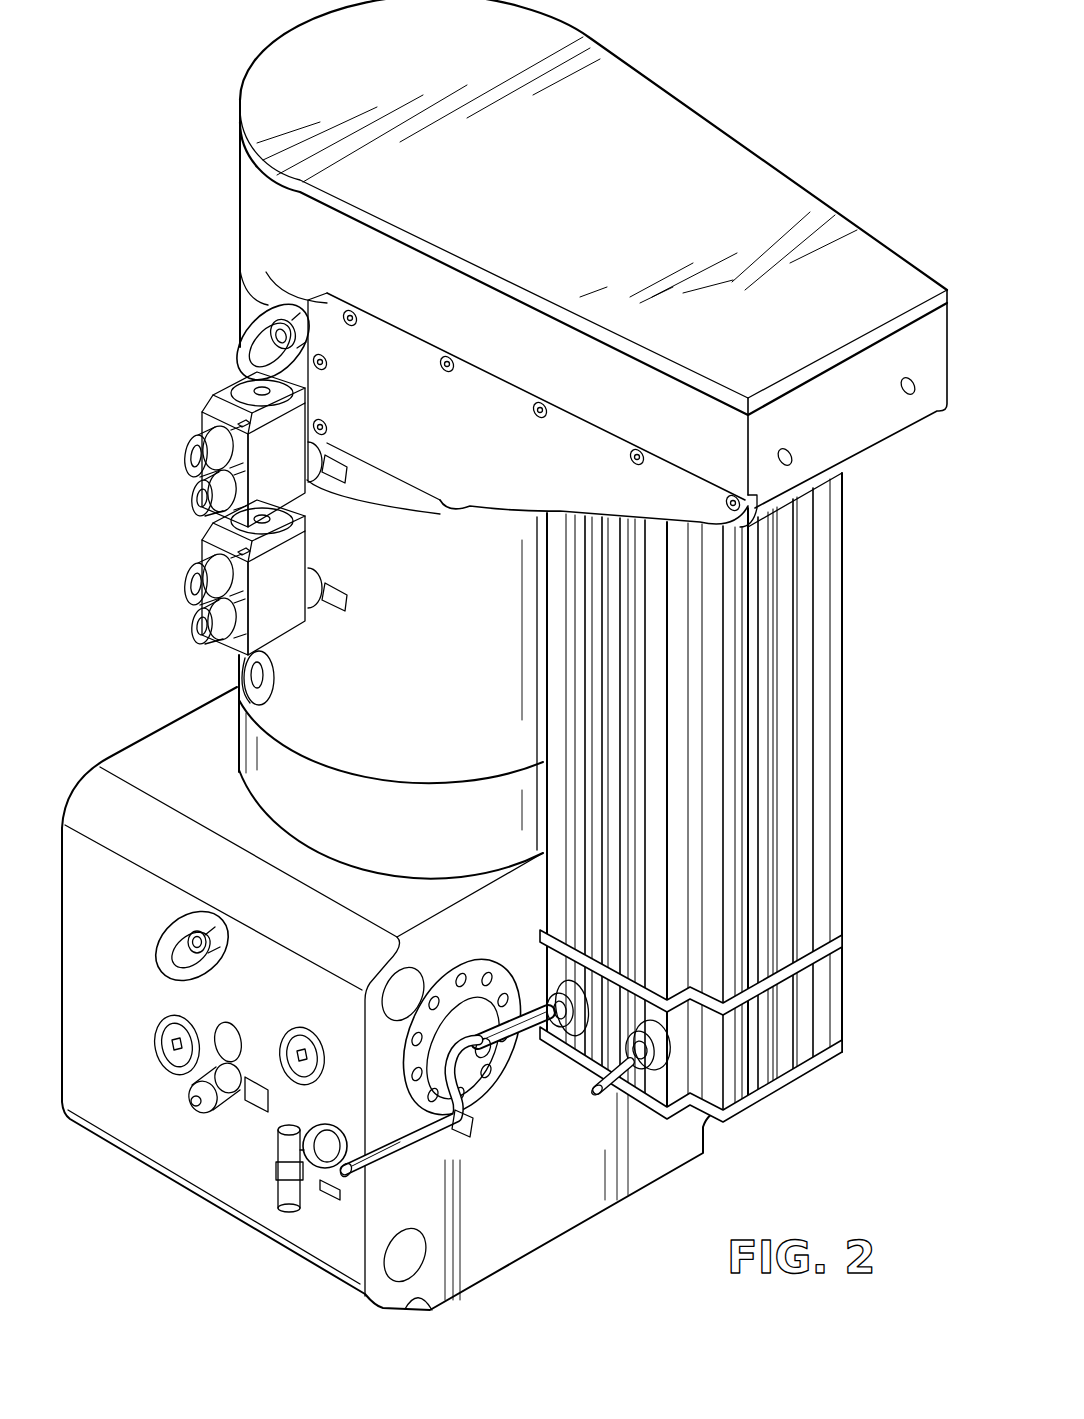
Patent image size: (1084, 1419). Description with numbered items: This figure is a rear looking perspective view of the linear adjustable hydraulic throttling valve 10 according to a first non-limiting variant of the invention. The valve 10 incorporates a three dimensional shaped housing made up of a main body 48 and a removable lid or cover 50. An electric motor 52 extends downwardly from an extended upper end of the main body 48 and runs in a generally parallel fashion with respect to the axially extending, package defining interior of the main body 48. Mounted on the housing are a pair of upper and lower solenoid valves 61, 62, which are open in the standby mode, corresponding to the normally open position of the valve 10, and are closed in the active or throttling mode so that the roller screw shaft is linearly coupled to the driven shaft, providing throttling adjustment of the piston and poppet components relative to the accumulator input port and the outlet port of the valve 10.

The linear adjustable hydraulic throttling valve 10 is at (84, 110).
The main body 48 is at (237, 302).
The removable lid or cover 50 is at (698, 163).
The electric motor 52 is at (837, 685).
The upper solenoid valve 61 is at (200, 421).
The lower solenoid valve 62 is at (200, 547).